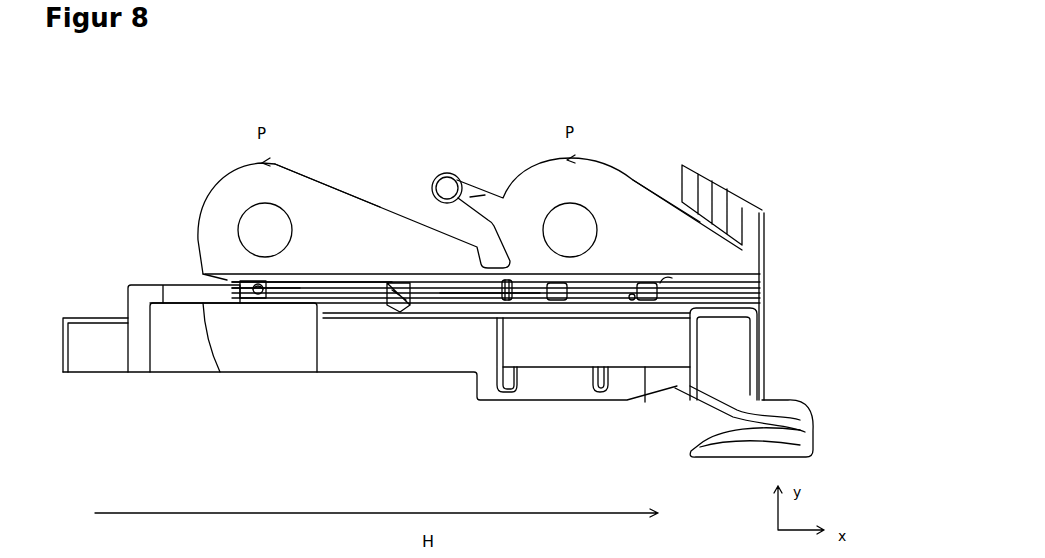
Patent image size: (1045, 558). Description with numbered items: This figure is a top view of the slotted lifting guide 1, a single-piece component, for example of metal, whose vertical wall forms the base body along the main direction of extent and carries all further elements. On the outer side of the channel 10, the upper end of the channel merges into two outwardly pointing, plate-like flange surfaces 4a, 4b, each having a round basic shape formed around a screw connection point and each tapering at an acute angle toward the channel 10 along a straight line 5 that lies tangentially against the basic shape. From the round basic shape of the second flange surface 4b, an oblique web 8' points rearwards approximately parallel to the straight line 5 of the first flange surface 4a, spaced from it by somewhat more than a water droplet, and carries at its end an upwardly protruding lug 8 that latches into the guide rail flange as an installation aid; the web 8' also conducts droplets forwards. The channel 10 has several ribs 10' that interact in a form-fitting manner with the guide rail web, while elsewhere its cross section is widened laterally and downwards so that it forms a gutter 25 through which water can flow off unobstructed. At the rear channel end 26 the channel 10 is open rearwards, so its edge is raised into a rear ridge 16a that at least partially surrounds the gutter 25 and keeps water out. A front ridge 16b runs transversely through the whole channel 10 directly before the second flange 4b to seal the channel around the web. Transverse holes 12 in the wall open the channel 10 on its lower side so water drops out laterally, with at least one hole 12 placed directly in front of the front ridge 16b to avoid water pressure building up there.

The slotted lifting guide 1 is at (400, 340).
The first rear flange surface 4a is at (345, 243).
The second flange surface 4b is at (653, 255).
The straight line 5 is at (345, 175).
The lug 8 is at (447, 165).
The web 8' is at (483, 164).
The channel 10 is at (456, 226).
The ribs 10' is at (494, 336).
The holes 12 is at (640, 298).
The rear ridge 16a is at (227, 280).
The front ridge 16b is at (392, 268).
The gutter 25 is at (297, 290).
The rear channel end 26 is at (248, 314).